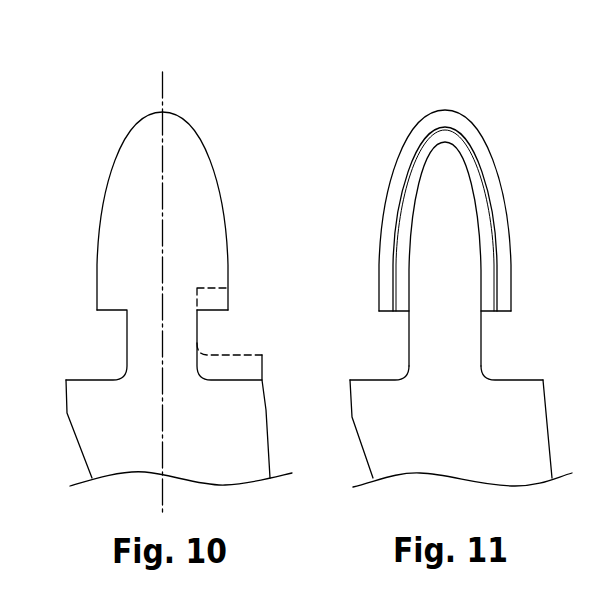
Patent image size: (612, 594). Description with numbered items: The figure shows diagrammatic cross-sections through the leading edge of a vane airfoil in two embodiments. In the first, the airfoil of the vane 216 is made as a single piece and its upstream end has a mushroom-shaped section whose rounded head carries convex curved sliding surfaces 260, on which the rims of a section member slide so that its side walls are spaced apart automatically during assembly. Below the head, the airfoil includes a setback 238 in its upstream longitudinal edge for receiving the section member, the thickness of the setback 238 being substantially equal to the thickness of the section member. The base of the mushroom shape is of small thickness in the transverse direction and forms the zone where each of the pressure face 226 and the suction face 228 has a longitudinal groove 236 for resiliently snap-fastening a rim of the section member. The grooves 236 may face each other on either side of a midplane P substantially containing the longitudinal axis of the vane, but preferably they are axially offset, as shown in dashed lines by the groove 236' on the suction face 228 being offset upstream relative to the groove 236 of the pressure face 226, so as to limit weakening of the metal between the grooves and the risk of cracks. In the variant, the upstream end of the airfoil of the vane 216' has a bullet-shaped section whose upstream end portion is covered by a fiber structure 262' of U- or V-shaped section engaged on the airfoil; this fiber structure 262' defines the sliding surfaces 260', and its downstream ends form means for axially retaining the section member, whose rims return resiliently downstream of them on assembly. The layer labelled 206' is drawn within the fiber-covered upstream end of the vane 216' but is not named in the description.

In FIG. 10, the midplane P is at (158, 85).
In FIG. 10, the vane 216 is at (179, 294).
In FIG. 10, the convex curved sliding surfaces 260 is at (176, 211).
In FIG. 10, the setback 238 is at (228, 248).
In FIG. 10, the groove on the suction face 236' is at (244, 320).
In FIG. 10, the longitudinal groove 236 is at (179, 345).
In FIG. 10, the suction face 228 is at (268, 450).
In FIG. 10, the pressure face 226 is at (77, 450).
In FIG. 11, the vane 216' is at (442, 257).
In FIG. 11, the fiber structure 262' is at (435, 186).
In FIG. 11, the sliding surfaces 260' is at (412, 210).
In FIG. 11, the intermediate layer 206' is at (479, 220).